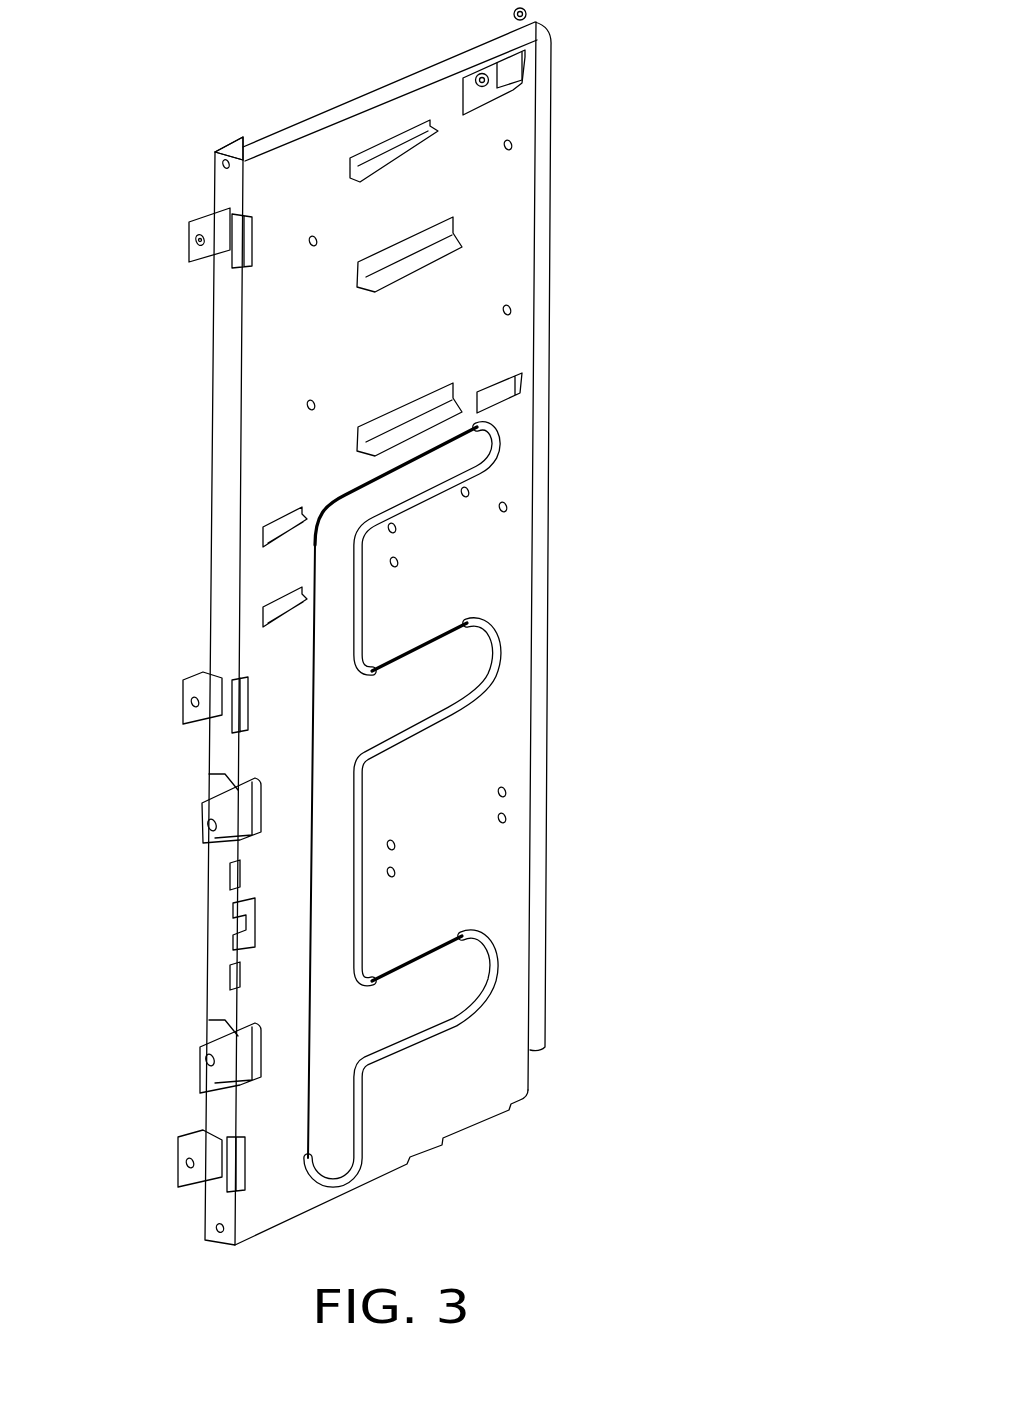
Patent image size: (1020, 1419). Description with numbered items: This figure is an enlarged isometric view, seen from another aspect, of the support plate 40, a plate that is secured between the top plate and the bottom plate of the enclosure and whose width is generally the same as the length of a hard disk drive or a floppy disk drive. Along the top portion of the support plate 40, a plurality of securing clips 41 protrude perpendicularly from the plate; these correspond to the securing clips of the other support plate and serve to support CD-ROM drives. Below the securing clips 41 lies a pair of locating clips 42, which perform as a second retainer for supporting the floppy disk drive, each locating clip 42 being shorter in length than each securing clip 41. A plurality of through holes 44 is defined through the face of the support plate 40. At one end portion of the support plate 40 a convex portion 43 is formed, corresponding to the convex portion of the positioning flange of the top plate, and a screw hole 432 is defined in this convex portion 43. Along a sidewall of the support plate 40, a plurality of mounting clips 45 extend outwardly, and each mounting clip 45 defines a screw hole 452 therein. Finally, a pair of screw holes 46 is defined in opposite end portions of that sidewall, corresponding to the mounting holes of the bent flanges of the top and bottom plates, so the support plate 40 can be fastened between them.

The support plate 40 is at (562, 405).
The securing clips 41 is at (398, 140).
The locating clips 42 is at (277, 522).
The convex portion 43 is at (513, 77).
The screw hole 432 is at (481, 74).
The through holes 44 is at (307, 403).
The mounting clips 45 is at (210, 222).
The screw hole 452 is at (195, 242).
The screw holes 46 is at (213, 157).